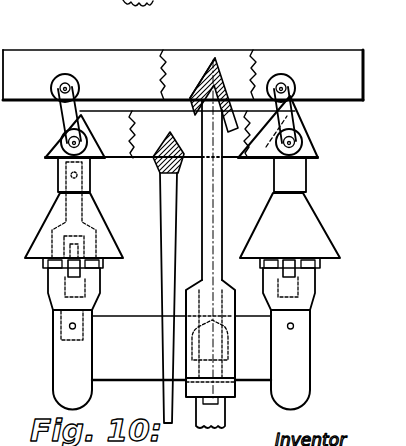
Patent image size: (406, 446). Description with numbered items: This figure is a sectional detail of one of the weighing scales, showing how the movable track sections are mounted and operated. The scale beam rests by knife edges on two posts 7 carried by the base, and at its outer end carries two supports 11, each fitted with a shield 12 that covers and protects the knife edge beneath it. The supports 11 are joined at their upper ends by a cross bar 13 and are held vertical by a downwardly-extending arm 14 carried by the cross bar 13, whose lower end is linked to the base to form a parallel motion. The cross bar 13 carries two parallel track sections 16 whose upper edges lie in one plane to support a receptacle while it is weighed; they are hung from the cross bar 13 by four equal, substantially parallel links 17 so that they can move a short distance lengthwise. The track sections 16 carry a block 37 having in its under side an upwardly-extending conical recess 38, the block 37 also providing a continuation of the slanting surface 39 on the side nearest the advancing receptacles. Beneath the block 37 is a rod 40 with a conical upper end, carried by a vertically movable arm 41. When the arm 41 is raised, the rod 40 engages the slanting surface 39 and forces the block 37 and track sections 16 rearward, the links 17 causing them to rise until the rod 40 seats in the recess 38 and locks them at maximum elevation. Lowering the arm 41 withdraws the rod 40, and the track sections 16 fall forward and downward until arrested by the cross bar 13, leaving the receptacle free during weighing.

The posts 7 is at (65, 354).
The supports 11 is at (311, 37).
The shield 12 is at (50, 222).
The cross bar 13 is at (120, 148).
The downwardly-extending arm 14 is at (170, 280).
The track sections 16 is at (52, 60).
The links 17 is at (65, 115).
The block 37 is at (196, 88).
The conical recess 38 is at (227, 87).
The slanting surface 39 is at (233, 137).
The rod 40 is at (216, 219).
The vertically movable arm 41 is at (230, 415).